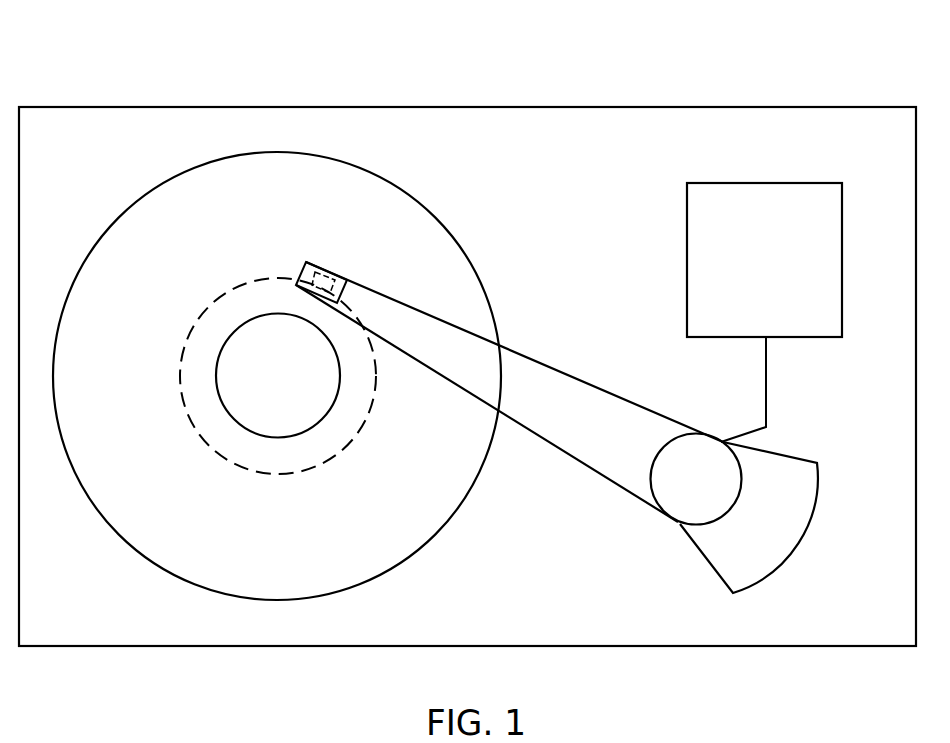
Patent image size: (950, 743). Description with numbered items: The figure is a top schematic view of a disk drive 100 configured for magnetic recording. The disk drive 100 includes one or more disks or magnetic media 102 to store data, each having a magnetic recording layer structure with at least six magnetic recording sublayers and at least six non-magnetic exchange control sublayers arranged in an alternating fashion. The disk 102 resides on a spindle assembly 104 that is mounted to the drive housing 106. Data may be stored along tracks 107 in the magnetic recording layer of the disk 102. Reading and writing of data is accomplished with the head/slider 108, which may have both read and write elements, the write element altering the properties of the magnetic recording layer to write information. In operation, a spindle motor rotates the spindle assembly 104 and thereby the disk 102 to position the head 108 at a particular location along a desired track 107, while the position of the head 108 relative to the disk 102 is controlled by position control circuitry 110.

The disk drive 100 is at (221, 72).
The magnetic medium 102 is at (412, 195).
The spindle assembly 104 is at (298, 379).
The drive housing 106 is at (613, 107).
The tracks 107 is at (248, 282).
The head/slider 108 is at (337, 277).
The position control circuitry 110 is at (778, 276).